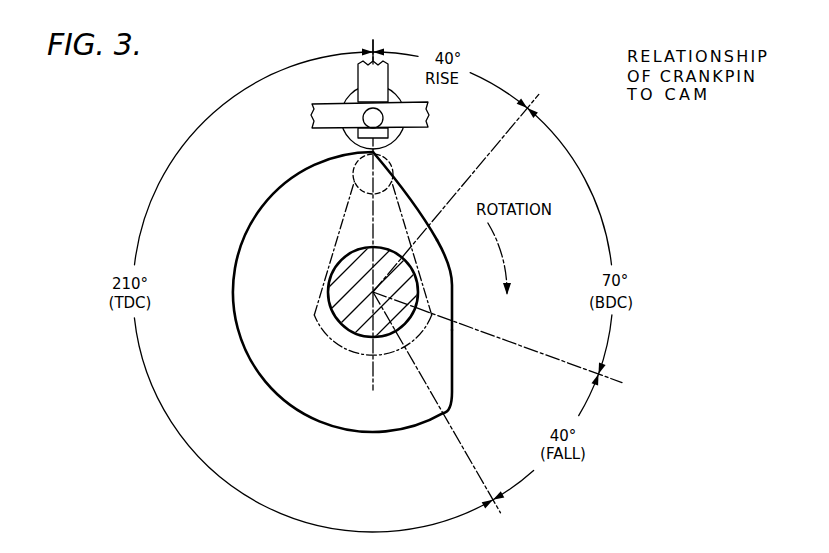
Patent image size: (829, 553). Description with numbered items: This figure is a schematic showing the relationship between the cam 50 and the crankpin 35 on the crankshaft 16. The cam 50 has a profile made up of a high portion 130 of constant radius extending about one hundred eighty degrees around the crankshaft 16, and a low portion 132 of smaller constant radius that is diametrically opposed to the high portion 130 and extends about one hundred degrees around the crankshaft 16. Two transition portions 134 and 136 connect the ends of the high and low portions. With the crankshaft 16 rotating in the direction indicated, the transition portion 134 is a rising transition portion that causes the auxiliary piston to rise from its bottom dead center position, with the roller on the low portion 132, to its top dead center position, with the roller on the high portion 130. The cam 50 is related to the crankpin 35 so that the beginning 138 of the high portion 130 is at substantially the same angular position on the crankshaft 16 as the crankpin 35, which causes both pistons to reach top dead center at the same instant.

The cam 50 is at (346, 292).
The high portion 130 is at (238, 332).
The rising transition portion 134 is at (400, 178).
The low portion 132 is at (448, 263).
The transition portion 136 is at (455, 376).
The crankshaft 16 is at (345, 319).
The crankpin 35 is at (400, 153).
The beginning of high portion 138 is at (352, 153).